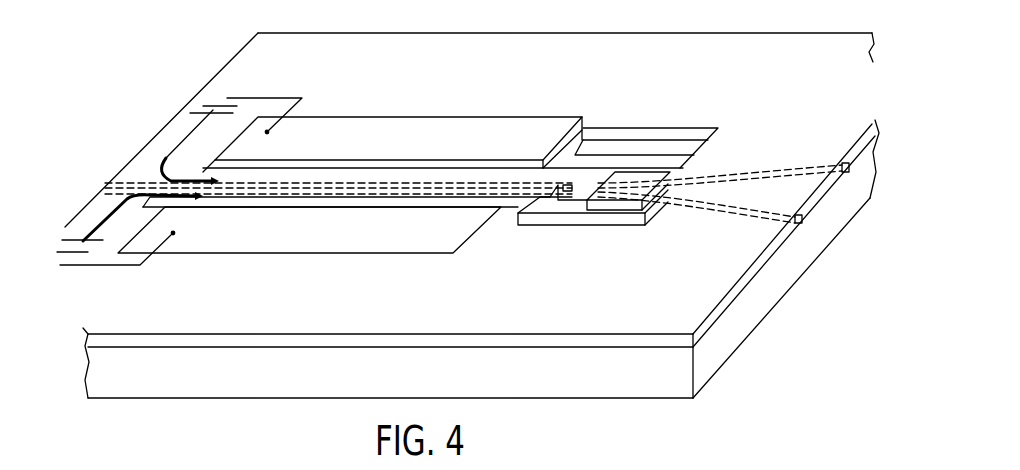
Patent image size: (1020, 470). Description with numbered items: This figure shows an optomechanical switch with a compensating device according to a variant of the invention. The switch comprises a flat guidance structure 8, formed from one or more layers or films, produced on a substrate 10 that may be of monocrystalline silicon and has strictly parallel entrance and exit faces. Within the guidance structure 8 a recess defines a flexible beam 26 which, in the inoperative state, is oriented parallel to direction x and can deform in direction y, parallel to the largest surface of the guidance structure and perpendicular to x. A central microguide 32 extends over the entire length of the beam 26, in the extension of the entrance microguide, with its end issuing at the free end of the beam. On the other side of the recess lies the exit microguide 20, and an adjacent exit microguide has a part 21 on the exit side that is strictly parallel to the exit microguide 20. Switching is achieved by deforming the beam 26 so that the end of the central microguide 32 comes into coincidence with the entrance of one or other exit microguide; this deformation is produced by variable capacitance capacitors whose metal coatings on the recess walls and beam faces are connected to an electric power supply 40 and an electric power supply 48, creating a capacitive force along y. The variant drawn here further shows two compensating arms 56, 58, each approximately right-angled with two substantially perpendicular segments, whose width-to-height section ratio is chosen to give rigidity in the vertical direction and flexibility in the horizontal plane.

The guidance structure 8 is at (707, 293).
The substrate 10 is at (717, 352).
The exit microguide 20 is at (798, 160).
The part of exit microguide 21 is at (760, 218).
The flexible beam 26 is at (437, 170).
The central microguide 32 is at (150, 175).
The electric power supply 40 is at (210, 105).
The electric power supply 48 is at (73, 240).
The compensating arm 56 is at (642, 158).
The compensating arm 58 is at (578, 222).